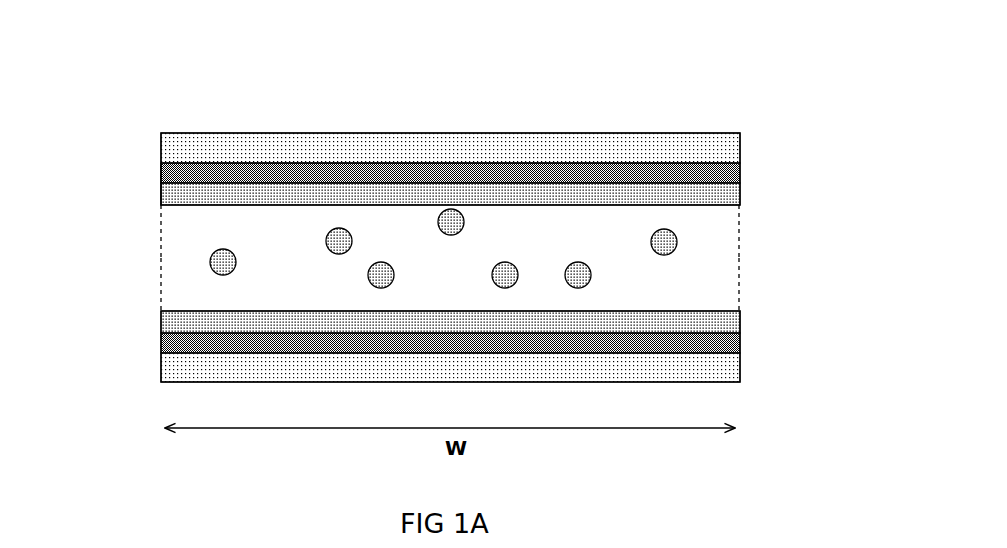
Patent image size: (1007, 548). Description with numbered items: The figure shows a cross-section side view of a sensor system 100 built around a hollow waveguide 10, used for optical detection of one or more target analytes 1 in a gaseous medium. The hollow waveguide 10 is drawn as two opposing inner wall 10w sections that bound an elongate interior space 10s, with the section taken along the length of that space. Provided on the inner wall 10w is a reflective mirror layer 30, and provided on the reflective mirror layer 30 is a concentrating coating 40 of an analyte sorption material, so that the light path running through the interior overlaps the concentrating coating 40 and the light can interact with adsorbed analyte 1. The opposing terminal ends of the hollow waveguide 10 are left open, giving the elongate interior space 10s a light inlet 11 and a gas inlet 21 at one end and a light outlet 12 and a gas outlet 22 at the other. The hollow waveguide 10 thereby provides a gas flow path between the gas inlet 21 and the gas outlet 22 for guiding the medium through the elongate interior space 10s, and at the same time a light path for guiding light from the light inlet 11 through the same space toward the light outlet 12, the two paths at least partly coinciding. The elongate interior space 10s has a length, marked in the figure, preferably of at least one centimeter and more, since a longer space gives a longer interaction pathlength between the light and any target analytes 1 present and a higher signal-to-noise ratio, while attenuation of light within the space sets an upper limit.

The sensor system 100 is at (113, 89).
The hollow waveguide 10 is at (218, 152).
The reflective mirror layer 30 is at (357, 170).
The concentrating coating 40 is at (638, 194).
The elongate interior space 10s is at (501, 226).
The inner wall 10w is at (250, 166).
The gas inlet 21 is at (135, 247).
The light inlet 11 is at (135, 280).
The gas outlet 22 is at (757, 237).
The light outlet 12 is at (757, 278).
The target analyte 1 is at (324, 249).